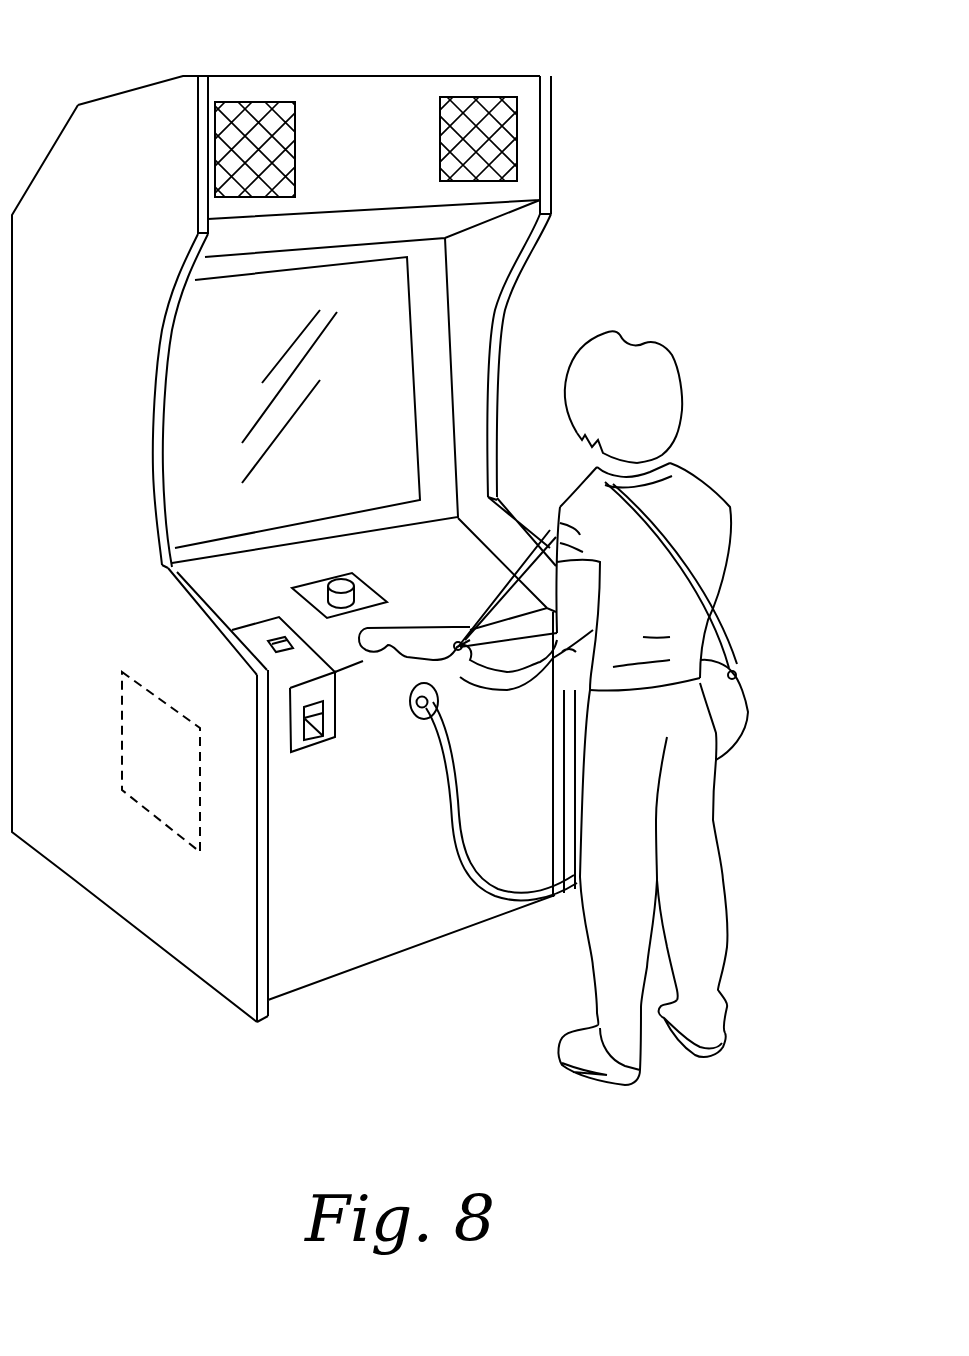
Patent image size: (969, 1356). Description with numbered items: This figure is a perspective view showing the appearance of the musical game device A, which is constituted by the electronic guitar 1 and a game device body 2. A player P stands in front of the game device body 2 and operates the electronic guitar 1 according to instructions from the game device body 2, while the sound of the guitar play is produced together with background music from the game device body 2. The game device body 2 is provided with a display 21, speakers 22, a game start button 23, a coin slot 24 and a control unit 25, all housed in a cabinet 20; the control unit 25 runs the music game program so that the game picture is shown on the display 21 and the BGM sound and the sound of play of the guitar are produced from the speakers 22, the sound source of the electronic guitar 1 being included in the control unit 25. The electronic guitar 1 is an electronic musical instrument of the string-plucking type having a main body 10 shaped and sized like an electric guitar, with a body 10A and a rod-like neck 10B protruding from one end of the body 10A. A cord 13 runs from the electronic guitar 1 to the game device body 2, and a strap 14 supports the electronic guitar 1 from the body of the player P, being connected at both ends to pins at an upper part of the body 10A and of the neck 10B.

The game device body 2 is at (552, 154).
The cabinet 20 is at (78, 105).
The display 21 is at (190, 397).
The speakers 22 is at (440, 140).
The game start button 23 is at (348, 582).
The coin slot 24 is at (310, 750).
The control unit 25 is at (122, 672).
The cord 13 is at (470, 870).
The neck 10B is at (550, 693).
The main body 10 is at (777, 747).
The body 10A is at (737, 748).
The electronic guitar 1 is at (777, 729).
The strap 14 is at (697, 558).
The player P is at (705, 490).
The musical game device A is at (665, 247).